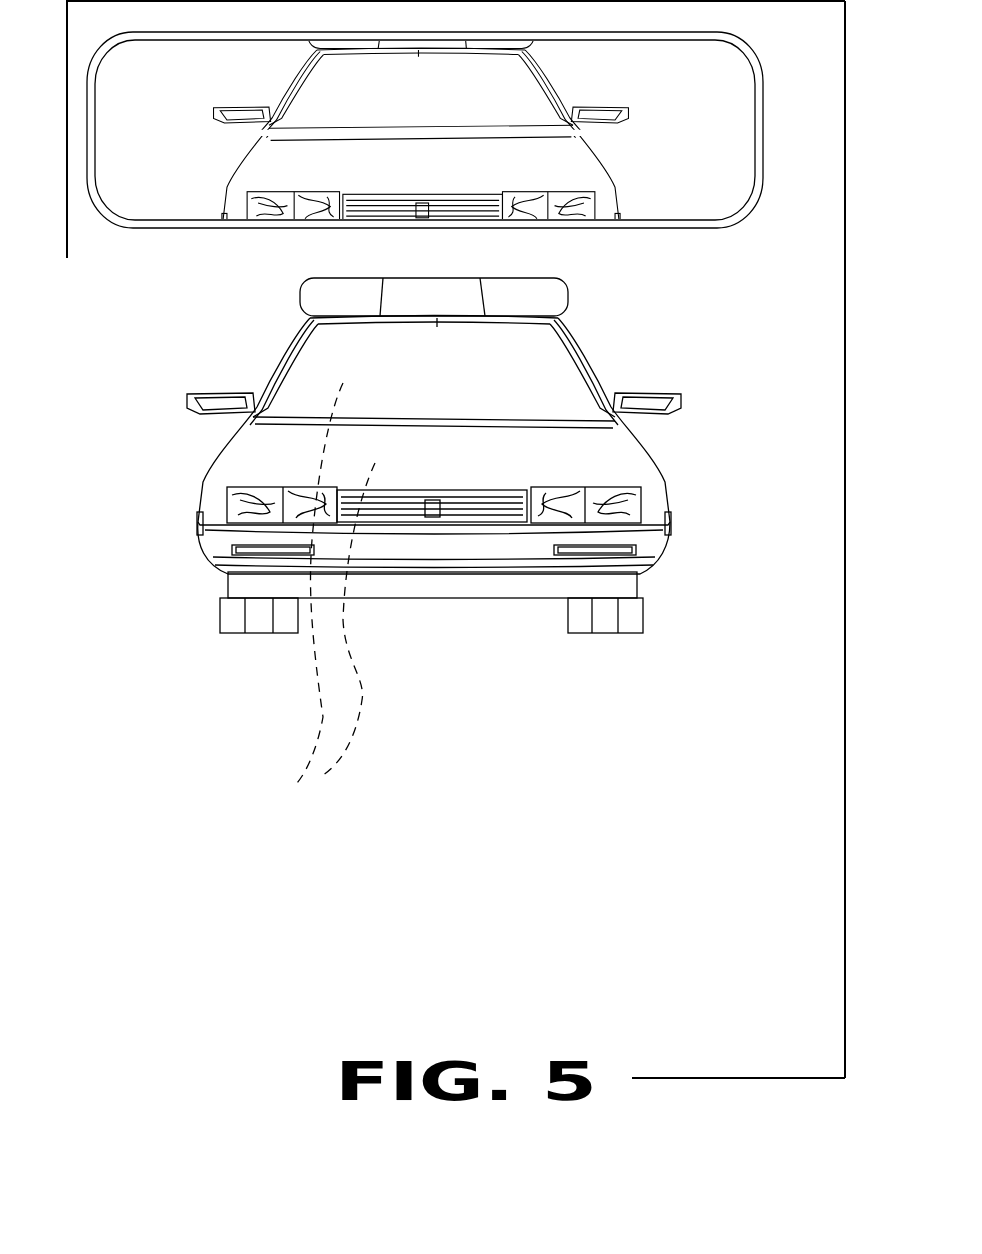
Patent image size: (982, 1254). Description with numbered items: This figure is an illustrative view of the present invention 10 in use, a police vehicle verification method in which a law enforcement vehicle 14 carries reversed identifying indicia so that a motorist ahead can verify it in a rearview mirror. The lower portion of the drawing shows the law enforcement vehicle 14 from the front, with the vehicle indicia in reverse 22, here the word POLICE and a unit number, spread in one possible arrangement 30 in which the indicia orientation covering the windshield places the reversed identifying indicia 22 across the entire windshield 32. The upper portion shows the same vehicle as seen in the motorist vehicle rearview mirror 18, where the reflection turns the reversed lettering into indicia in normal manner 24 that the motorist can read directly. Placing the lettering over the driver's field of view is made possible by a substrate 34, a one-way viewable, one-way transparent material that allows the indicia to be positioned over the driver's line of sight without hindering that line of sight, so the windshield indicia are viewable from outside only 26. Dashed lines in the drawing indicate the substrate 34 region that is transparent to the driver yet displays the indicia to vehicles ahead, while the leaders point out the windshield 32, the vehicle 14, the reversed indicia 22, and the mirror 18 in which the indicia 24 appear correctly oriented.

The police vehicle verification method 10 is at (456, 539).
The law enforcement vehicle 14 is at (374, 480).
The motorist vehicle rearview mirror 18 is at (190, 192).
The vehicle indicia in reverse 22 is at (427, 468).
The indicia in normal manner 24 is at (447, 180).
The windshield indicia viewable from outside only 26 is at (337, 365).
The indicia orientation covering windshield 30 is at (543, 353).
The windshield 32 is at (293, 382).
The substrate 34 is at (304, 779).